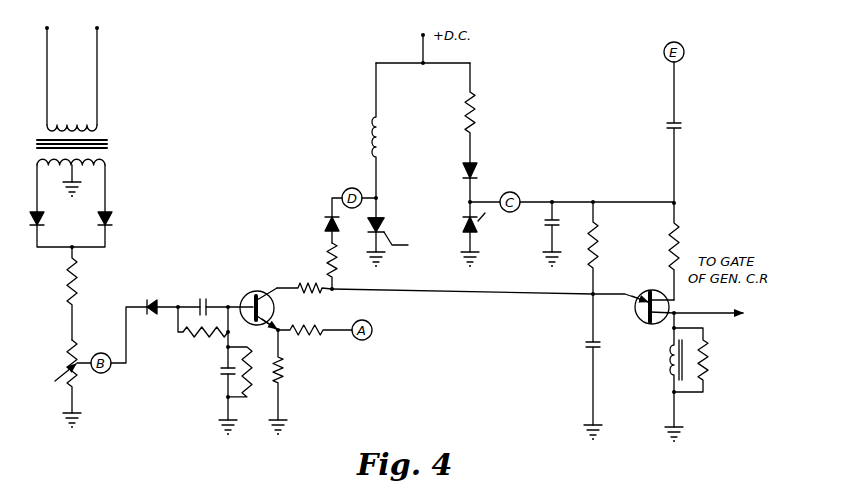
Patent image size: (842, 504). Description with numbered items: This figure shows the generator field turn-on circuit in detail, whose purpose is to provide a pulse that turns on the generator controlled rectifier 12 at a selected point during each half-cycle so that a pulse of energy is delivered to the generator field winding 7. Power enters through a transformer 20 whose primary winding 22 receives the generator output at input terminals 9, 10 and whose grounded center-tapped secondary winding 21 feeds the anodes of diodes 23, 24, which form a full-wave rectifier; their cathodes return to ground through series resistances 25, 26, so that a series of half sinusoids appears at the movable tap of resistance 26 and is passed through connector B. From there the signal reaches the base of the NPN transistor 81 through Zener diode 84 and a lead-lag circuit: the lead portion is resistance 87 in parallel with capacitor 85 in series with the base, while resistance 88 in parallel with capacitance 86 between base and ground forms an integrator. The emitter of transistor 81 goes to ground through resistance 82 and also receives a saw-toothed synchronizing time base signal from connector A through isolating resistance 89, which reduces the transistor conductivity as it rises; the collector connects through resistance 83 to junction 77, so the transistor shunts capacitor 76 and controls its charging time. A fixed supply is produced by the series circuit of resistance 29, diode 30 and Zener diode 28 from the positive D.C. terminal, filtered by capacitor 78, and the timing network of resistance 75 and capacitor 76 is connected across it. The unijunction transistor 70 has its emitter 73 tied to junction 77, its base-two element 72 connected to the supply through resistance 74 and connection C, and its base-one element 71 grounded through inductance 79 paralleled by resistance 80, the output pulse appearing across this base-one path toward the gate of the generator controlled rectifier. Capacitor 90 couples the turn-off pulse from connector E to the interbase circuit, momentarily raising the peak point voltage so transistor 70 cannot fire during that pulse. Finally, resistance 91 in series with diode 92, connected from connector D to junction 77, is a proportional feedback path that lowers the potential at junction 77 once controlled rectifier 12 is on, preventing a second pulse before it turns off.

The input terminal 9 is at (47, 28).
The input terminal 10 is at (97, 28).
The primary winding 22 is at (72, 124).
The transformer 20 is at (110, 143).
The secondary winding 21 is at (105, 160).
The diode 23 is at (46, 222).
The diode 24 is at (112, 221).
The resistance 25 is at (66, 287).
The resistance 26 is at (51, 376).
The Zener diode 84 is at (157, 302).
The capacitor 85 is at (208, 300).
The resistance 87 is at (210, 336).
The capacitance 86 is at (226, 375).
The resistance 88 is at (246, 381).
The transistor 81 is at (272, 312).
The resistance 83 is at (299, 287).
The isolating resistance 89 is at (318, 333).
The resistance 82 is at (283, 382).
The resistance 91 is at (330, 250).
The diode 92 is at (325, 226).
The generator field winding 7 is at (380, 138).
The generator controlled rectifier 12 is at (385, 228).
The resistance 29 is at (476, 127).
The diode 30 is at (478, 170).
The Zener diode 28 is at (468, 226).
The capacitor 78 is at (548, 229).
The resistance 75 is at (600, 250).
The junction 77 is at (588, 298).
The capacitor 76 is at (585, 348).
The capacitor 90 is at (681, 128).
The resistance 74 is at (682, 246).
The unijunction transistor 70 is at (648, 322).
The base-two element 72 is at (651, 292).
The emitter 73 is at (641, 305).
The base-one element 71 is at (669, 316).
The inductance 79 is at (668, 356).
The resistance 80 is at (708, 350).